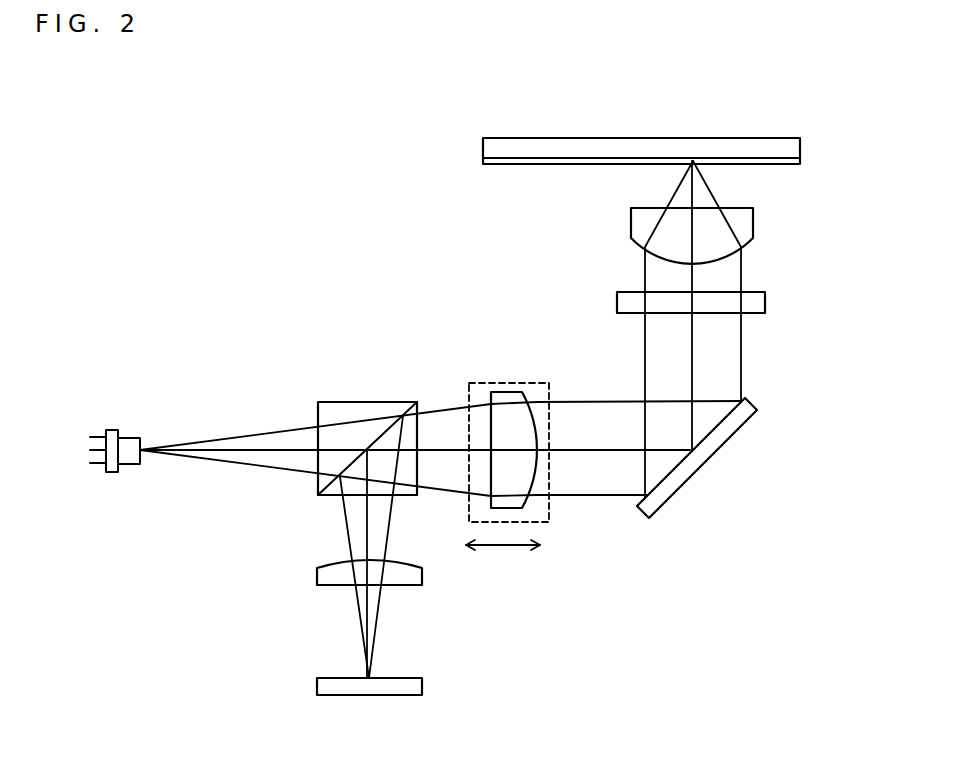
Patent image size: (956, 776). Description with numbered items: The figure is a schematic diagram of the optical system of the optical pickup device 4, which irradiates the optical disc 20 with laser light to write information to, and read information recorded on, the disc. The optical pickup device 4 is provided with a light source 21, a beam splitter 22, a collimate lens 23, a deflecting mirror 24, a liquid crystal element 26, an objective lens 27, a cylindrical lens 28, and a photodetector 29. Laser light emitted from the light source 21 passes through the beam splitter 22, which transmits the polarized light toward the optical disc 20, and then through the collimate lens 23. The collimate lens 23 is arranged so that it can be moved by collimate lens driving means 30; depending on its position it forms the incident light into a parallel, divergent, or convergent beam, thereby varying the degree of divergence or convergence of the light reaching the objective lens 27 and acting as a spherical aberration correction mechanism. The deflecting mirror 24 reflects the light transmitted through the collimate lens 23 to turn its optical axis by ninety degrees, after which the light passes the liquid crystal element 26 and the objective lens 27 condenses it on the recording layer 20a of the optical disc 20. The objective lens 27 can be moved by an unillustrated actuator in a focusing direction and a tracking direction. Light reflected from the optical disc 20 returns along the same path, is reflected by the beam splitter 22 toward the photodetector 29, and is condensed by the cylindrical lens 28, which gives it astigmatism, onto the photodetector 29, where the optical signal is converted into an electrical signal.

The optical pickup device 4 is at (345, 260).
The optical disc 20 is at (517, 138).
The recording layer 20a is at (764, 164).
The light source 21 is at (107, 430).
The beam splitter 22 is at (345, 402).
The collimate lens 23 is at (502, 392).
The deflecting mirror 24 is at (705, 462).
The liquid crystal element 26 is at (617, 293).
The objective lens 27 is at (631, 222).
The cylindrical lens 28 is at (317, 575).
The photodetector 29 is at (317, 683).
The collimate lens driving means 30 is at (542, 525).